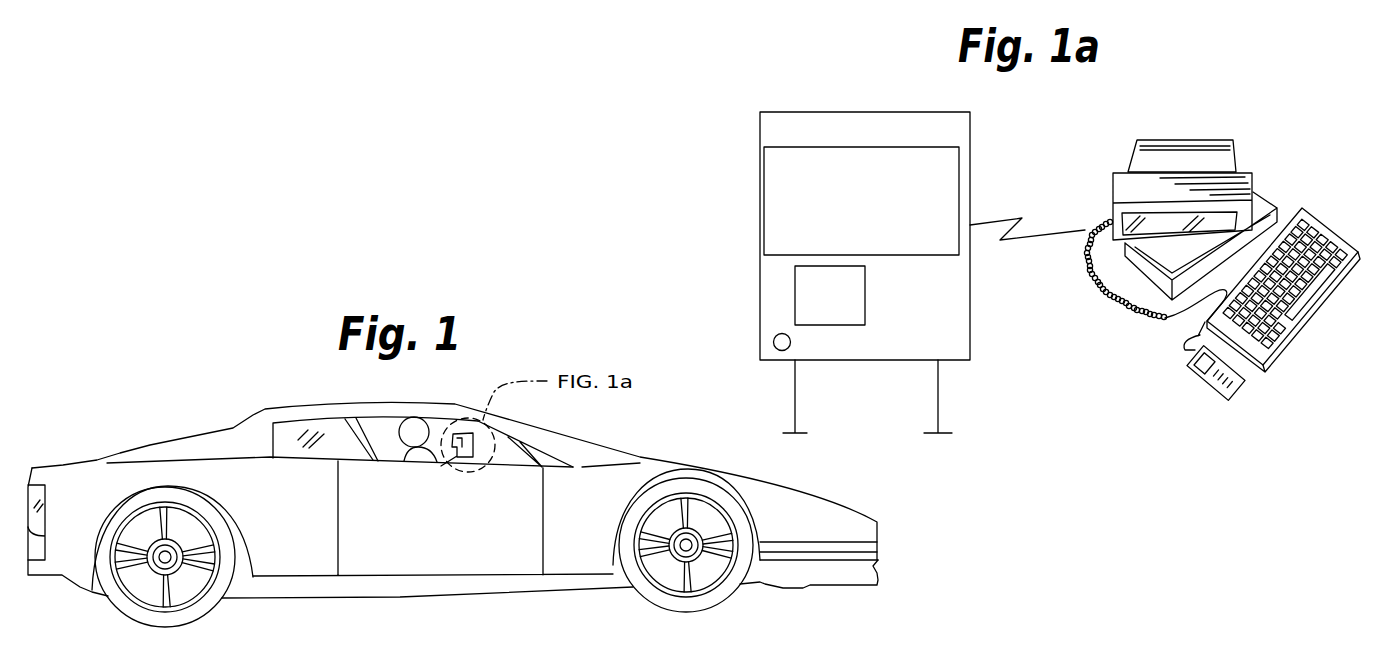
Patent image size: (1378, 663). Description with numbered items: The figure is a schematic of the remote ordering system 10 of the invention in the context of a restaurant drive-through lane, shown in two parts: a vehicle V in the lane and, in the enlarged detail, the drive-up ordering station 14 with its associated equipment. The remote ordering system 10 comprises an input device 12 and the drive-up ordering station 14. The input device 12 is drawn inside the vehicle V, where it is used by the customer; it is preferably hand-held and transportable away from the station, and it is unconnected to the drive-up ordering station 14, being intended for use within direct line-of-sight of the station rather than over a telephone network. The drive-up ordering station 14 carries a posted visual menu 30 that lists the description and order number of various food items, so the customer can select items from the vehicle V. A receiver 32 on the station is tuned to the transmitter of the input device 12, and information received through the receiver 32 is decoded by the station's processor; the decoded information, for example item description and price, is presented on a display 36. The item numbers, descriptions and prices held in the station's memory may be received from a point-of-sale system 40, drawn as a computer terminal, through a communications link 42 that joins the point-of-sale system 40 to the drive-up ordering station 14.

In FIG. 1, the vehicle V is at (307, 412).
In FIG. 1, the input device 12 is at (466, 432).
In FIG. 1A, the remote ordering system 10 is at (744, 146).
In FIG. 1A, the drive-up ordering station 14 is at (970, 163).
In FIG. 1A, the posted visual menu 30 is at (770, 168).
In FIG. 1A, the receiver 32 is at (778, 336).
In FIG. 1A, the display 36 is at (865, 288).
In FIG. 1A, the point-of-sale system 40 is at (1225, 138).
In FIG. 1A, the communications link 42 is at (1023, 240).